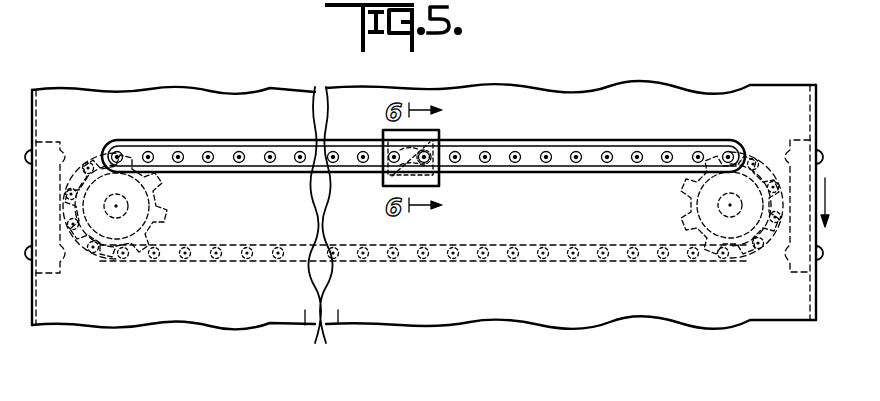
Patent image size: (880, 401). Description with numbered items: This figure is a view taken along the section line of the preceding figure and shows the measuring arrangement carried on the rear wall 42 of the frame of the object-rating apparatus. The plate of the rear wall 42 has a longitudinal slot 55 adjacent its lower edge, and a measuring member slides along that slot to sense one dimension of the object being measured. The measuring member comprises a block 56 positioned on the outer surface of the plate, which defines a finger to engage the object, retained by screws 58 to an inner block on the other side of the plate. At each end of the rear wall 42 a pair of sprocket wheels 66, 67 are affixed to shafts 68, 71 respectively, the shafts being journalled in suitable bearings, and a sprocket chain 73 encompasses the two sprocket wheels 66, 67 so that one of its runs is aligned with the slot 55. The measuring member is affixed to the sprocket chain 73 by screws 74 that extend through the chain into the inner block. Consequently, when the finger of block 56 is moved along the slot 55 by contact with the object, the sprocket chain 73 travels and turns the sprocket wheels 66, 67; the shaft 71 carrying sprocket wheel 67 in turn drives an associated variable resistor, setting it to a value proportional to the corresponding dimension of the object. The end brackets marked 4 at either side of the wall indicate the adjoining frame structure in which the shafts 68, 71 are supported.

The frame bracket 4 is at (423, 206).
The rear wall 42 is at (338, 312).
The longitudinal slot 55 is at (572, 140).
The block 56 is at (440, 183).
The screws 58 is at (388, 183).
The sprocket wheel 66 is at (167, 200).
The sprocket wheel 67 is at (677, 205).
The shaft 68 is at (117, 215).
The shaft 71 is at (733, 213).
The sprocket chain 73 is at (268, 259).
The screws 74 is at (426, 156).